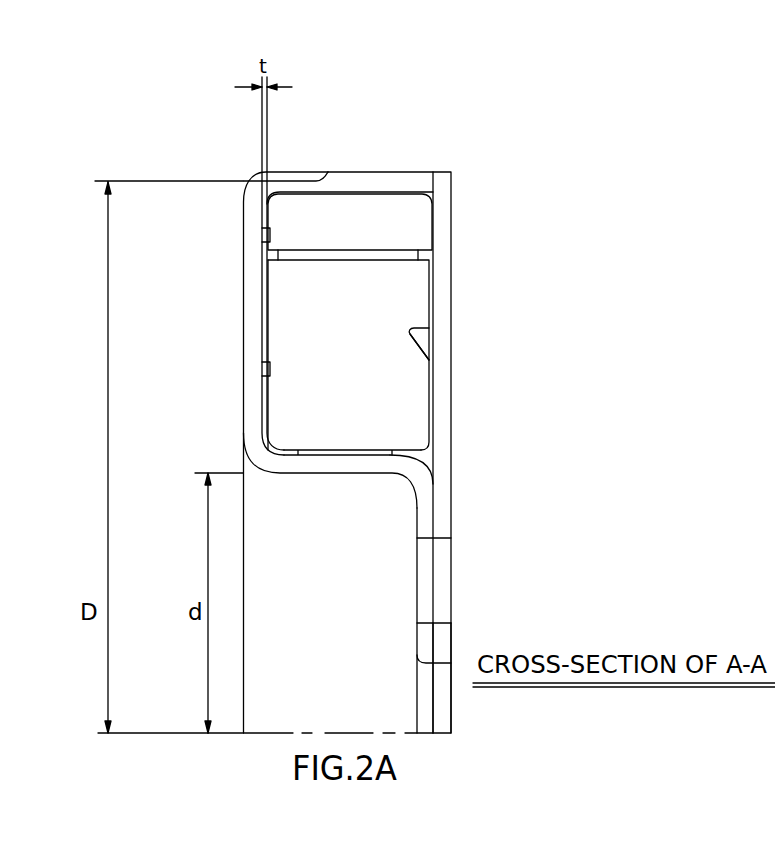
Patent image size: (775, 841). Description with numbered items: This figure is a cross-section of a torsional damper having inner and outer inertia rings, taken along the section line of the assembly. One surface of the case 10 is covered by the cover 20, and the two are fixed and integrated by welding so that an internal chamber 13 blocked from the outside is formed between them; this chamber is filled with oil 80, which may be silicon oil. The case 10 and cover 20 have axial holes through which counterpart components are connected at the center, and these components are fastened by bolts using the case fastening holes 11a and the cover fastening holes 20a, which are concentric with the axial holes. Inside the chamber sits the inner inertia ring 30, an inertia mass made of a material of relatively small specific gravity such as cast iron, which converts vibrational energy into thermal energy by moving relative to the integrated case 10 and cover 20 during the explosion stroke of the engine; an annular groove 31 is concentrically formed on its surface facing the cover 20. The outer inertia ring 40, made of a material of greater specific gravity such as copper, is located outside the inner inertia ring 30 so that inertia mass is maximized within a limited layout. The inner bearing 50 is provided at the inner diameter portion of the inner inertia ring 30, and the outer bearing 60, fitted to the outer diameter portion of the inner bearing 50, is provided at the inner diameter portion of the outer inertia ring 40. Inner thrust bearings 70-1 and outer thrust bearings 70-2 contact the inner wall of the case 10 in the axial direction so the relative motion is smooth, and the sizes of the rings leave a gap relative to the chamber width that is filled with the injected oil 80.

The case 10 is at (245, 347).
The case fastening holes 11a is at (423, 597).
The internal chamber 13 is at (425, 200).
The cover 20 is at (440, 492).
The cover fastening holes 20a is at (445, 578).
The inner inertia ring 30 is at (375, 307).
The annular groove 31 is at (412, 335).
The outer inertia ring 40 is at (383, 215).
The inner bearing 50 is at (360, 449).
The outer bearing 60 is at (349, 252).
The inner thrust bearings 70-1 is at (262, 370).
The outer thrust bearings 70-2 is at (262, 229).
The oil 80 is at (422, 339).